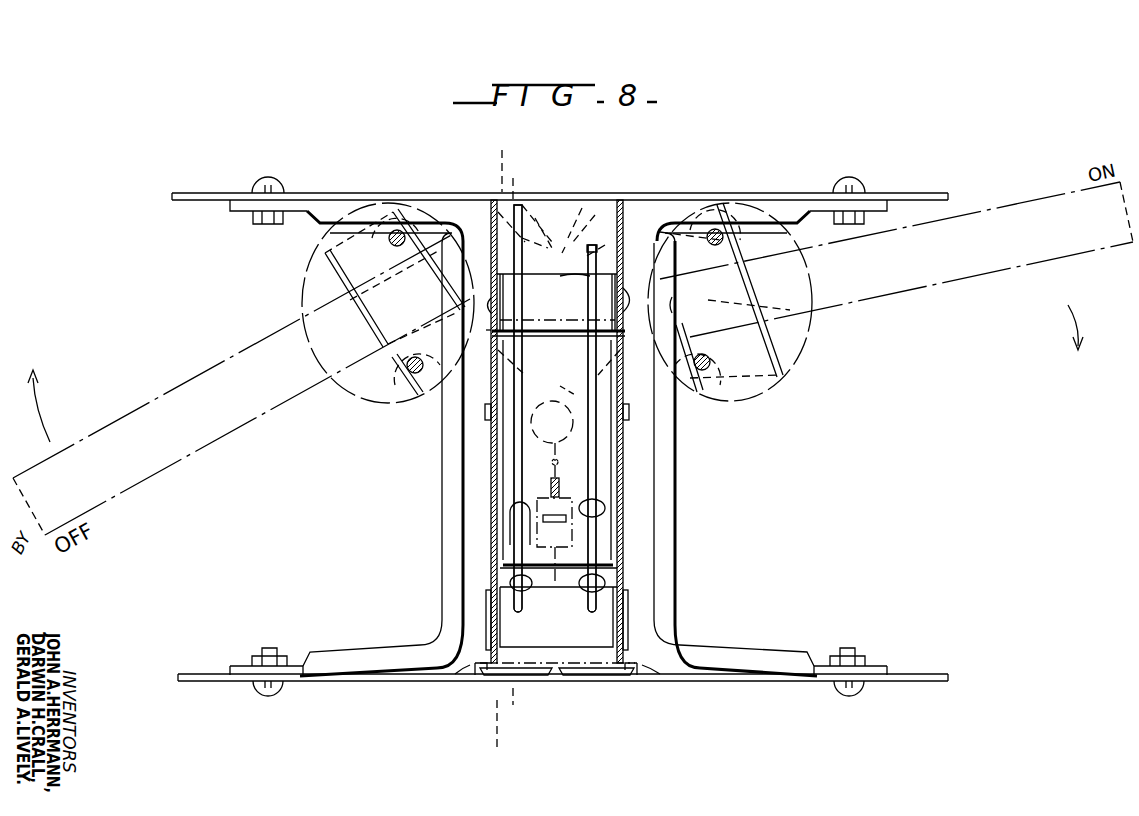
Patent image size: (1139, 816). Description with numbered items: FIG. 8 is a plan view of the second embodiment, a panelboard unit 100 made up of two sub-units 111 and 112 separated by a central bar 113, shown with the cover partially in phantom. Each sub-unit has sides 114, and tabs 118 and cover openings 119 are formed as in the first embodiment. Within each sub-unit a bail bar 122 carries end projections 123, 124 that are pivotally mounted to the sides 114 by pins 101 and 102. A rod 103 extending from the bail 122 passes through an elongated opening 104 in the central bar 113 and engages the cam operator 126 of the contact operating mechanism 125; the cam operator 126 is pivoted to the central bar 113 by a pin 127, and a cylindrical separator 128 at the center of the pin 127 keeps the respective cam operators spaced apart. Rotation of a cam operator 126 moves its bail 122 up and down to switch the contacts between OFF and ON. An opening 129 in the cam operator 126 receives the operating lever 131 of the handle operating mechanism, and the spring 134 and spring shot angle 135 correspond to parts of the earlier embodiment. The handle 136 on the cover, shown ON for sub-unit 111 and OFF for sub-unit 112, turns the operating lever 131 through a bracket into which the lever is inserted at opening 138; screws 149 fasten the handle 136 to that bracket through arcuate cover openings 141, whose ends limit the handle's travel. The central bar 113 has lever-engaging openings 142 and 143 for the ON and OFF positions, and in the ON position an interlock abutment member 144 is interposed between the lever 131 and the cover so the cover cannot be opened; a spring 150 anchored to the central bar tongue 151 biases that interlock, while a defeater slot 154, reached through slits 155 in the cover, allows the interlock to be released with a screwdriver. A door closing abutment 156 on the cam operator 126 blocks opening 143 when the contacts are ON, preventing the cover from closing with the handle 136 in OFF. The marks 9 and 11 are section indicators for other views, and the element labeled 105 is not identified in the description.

The panelboard unit 100 is at (871, 132).
The pin 101 is at (275, 687).
The pin 102 is at (258, 182).
The extending rod 103 is at (542, 415).
The elongated opening 104 is at (497, 398).
The latch 105 is at (577, 398).
The sub-unit 111 is at (811, 503).
The sub-unit 112 is at (354, 485).
The central bar 113 is at (481, 464).
The sides 114 is at (916, 193).
The tabs 118 is at (478, 676).
The cover openings 119 is at (455, 675).
The bail bar 122 is at (441, 540).
The end projection 123 is at (367, 652).
The end projection 124 is at (330, 212).
The contact operating mechanism 125 is at (562, 252).
The cam operator 126 is at (590, 285).
The pin 127 is at (488, 332).
The cylindrical separator 128 is at (565, 313).
The opening 129 is at (525, 259).
The operating lever 131 is at (491, 305).
The spring 134 is at (512, 530).
The spring shot angle 135 is at (556, 580).
The handle 136 is at (216, 372).
The opening 138 is at (675, 295).
The arcuate cover openings 141 is at (345, 300).
The operating lever engaging opening 142 is at (595, 376).
The operating lever engaging opening 143 is at (588, 205).
The interlock abutment member 144 is at (490, 478).
The screws 149 is at (399, 247).
The spring 150 is at (559, 490).
The central bar tongue 151 is at (558, 463).
The defeater slot 154 is at (596, 505).
The slits 155 is at (555, 408).
The door closing abutment 156 is at (520, 205).
The section line 9 is at (502, 150).
The section line 11 is at (513, 178).